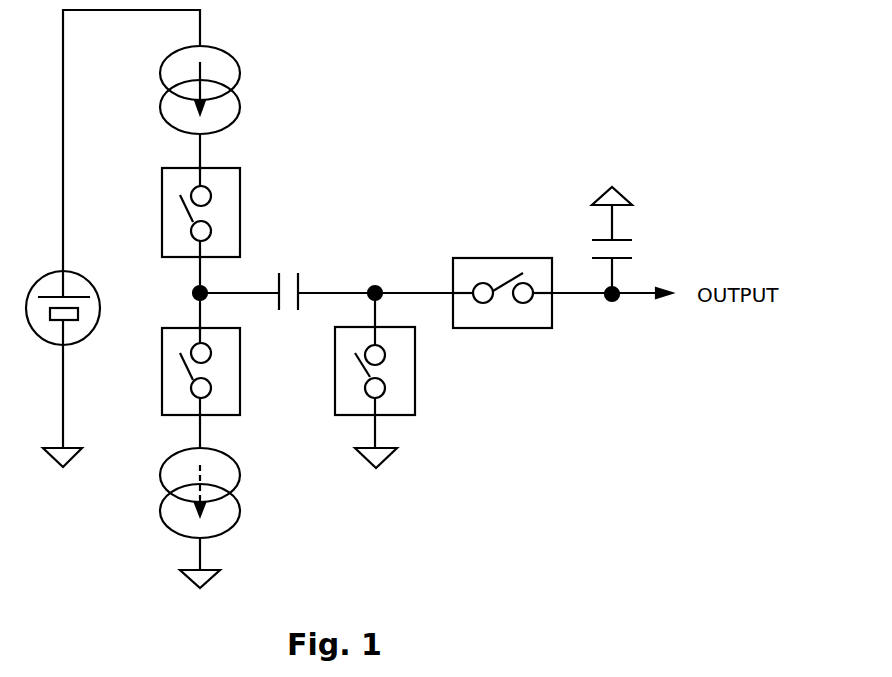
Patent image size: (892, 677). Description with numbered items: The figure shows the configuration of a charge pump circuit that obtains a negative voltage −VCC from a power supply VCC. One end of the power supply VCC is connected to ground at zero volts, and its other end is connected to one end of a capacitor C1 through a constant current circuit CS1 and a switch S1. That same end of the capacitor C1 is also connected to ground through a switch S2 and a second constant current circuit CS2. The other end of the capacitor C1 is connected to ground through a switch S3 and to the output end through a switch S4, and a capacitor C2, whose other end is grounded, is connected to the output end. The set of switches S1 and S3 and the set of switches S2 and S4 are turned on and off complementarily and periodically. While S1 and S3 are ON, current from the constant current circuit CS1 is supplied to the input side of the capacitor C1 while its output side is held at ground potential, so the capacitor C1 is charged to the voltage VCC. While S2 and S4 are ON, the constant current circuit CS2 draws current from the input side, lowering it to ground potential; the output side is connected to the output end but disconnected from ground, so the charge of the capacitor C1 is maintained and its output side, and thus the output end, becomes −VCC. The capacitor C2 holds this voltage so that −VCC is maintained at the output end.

The power supply VCC is at (56, 323).
The constant current circuit CS1 is at (225, 90).
The constant current circuit CS2 is at (224, 493).
The switch S1 is at (222, 212).
The switch S2 is at (222, 371).
The switch S3 is at (396, 371).
The switch S4 is at (502, 278).
The capacitor C1 is at (290, 278).
The capacitor C2 is at (633, 240).